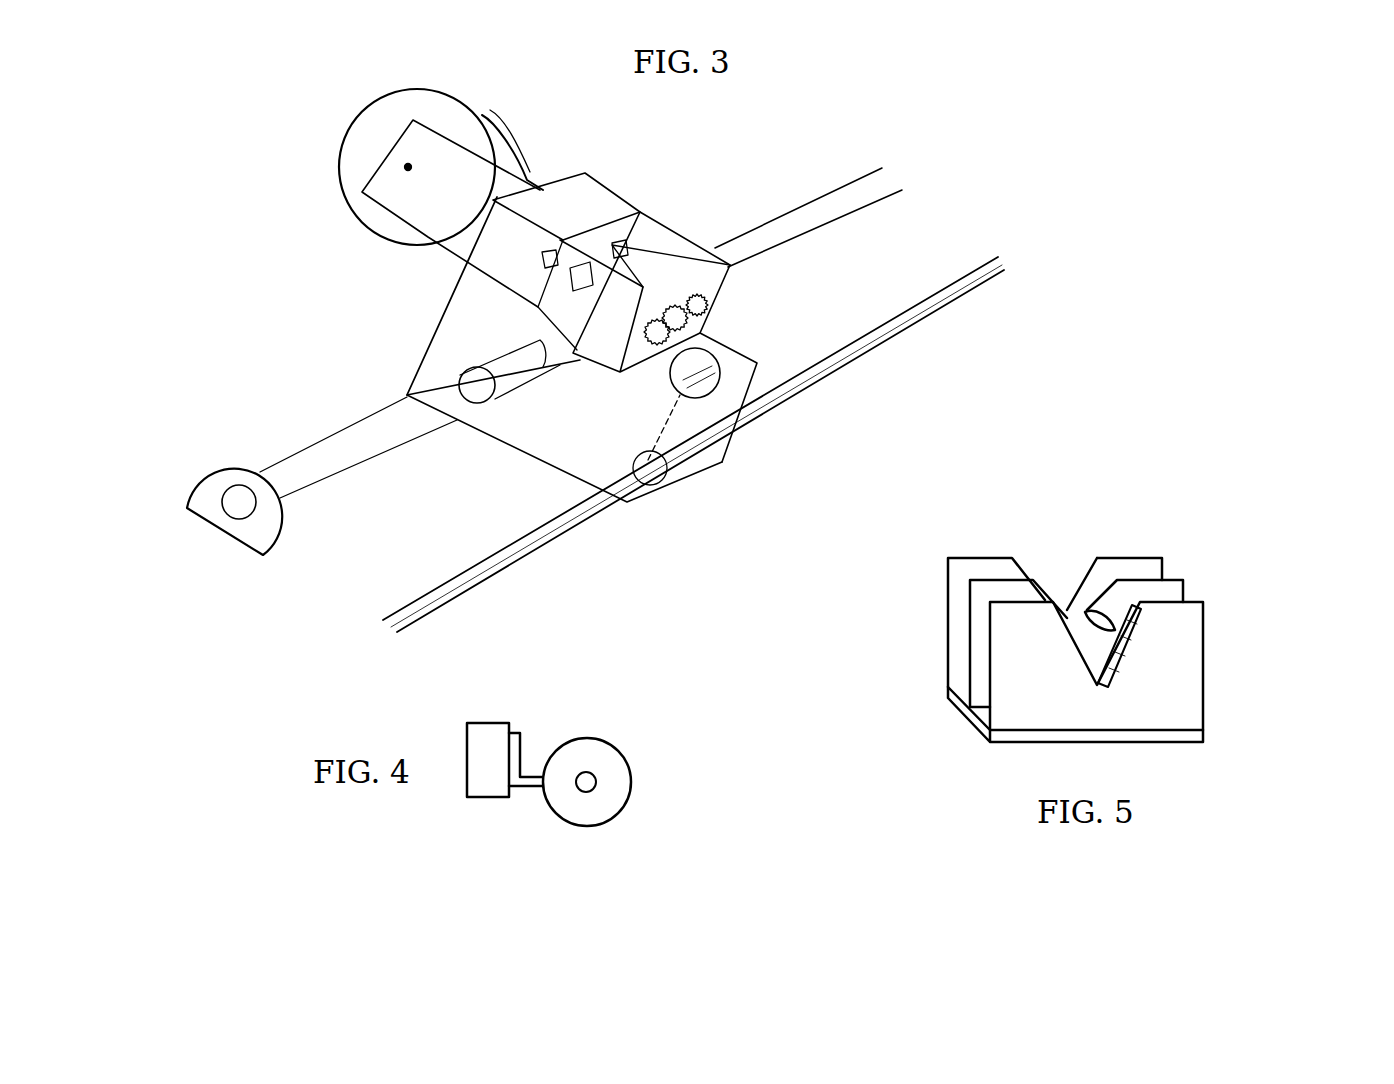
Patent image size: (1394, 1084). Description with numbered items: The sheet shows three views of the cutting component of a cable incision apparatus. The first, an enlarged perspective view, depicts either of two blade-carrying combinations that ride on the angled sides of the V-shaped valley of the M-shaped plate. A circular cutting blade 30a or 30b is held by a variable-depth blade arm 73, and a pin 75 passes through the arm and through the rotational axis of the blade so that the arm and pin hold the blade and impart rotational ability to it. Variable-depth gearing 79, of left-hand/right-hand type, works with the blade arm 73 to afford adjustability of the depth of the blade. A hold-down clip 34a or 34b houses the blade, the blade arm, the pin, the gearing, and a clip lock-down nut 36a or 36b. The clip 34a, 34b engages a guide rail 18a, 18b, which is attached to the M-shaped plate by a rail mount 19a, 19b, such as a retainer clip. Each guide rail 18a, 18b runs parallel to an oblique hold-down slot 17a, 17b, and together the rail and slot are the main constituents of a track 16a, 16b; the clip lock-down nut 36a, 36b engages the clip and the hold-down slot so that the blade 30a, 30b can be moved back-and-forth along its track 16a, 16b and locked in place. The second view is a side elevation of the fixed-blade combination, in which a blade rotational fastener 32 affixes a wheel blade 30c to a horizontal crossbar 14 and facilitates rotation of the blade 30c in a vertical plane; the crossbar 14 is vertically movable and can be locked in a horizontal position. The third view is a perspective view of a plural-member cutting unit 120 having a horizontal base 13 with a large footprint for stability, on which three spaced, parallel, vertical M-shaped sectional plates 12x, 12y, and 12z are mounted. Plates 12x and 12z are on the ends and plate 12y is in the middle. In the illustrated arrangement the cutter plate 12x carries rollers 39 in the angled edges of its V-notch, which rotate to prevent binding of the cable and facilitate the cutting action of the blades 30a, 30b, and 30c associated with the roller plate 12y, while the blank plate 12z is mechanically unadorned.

In FIG. 3, the rotational cutting blade 30a is at (377, 167).
In FIG. 5, the rotational cutting blade 30a is at (1066, 543).
In FIG. 3, the rotational cutting blade 30b is at (362, 144).
In FIG. 5, the rotational cutting blade 30b is at (1098, 613).
In FIG. 4, the wheel blade 30c is at (600, 750).
In FIG. 3, the variable-depth blade arm 73 is at (457, 237).
In FIG. 3, the pin 75 is at (408, 177).
In FIG. 3, the variable-depth gearing 79 is at (662, 336).
In FIG. 3, the clip lock-down nut 36a is at (747, 389).
In FIG. 3, the clip lock-down nut 36b is at (694, 362).
In FIG. 3, the movable clip 34a is at (564, 425).
In FIG. 3, the movable clip 34b is at (500, 450).
In FIG. 3, the guide rail 18a is at (341, 440).
In FIG. 3, the guide rail 18b is at (327, 448).
In FIG. 3, the rail mount 19a is at (234, 550).
In FIG. 3, the rail mount 19b is at (257, 535).
In FIG. 3, the track 16a is at (913, 191).
In FIG. 3, the track 16b is at (908, 140).
In FIG. 3, the oblique hold-down slot 17a is at (693, 444).
In FIG. 3, the oblique hold-down slot 17b is at (820, 375).
In FIG. 4, the horizontal crossbar 14 is at (488, 732).
In FIG. 4, the blade rotational fastener 32 is at (532, 780).
In FIG. 5, the plural-member cutting unit 120 is at (1075, 598).
In FIG. 5, the cutter sectional plate 12x is at (1185, 675).
In FIG. 5, the roller sectional plate 12y is at (978, 593).
In FIG. 5, the blank sectional plate 12z is at (1130, 568).
In FIG. 5, the horizontal base 13 is at (975, 718).
In FIG. 5, the rollers 39 is at (1130, 655).